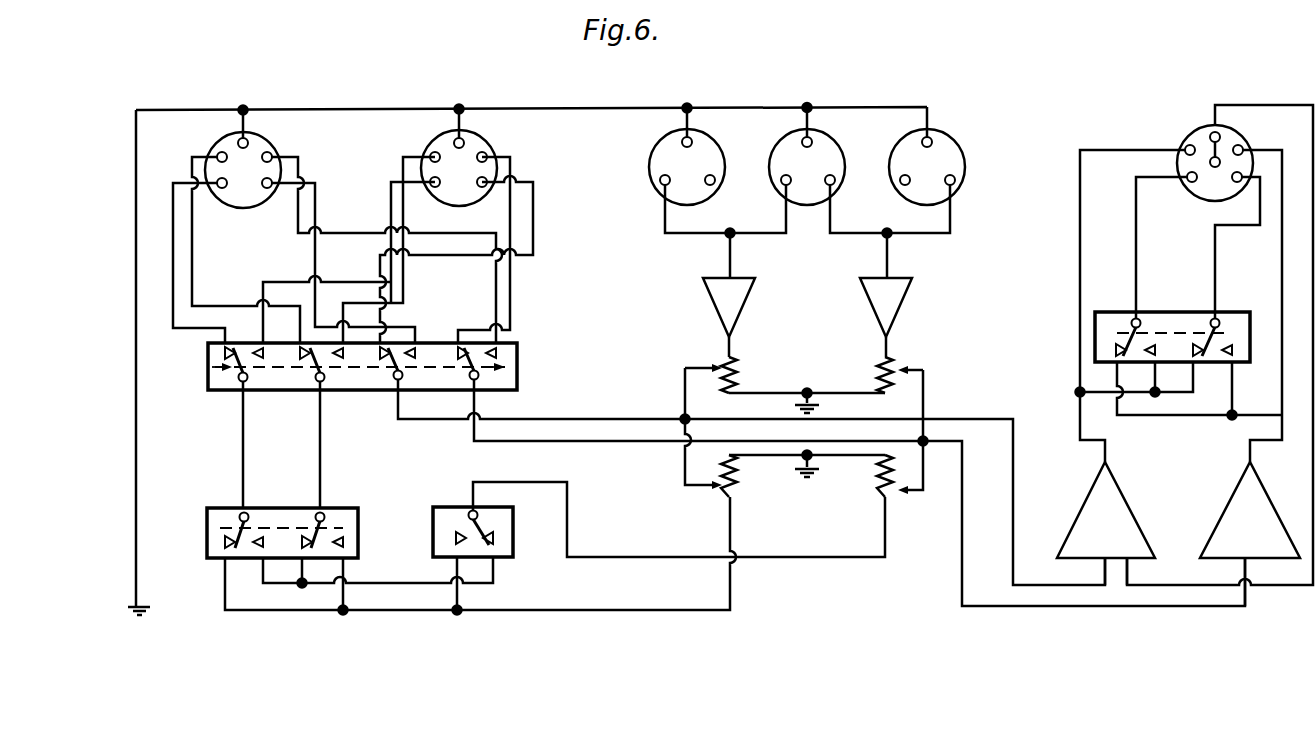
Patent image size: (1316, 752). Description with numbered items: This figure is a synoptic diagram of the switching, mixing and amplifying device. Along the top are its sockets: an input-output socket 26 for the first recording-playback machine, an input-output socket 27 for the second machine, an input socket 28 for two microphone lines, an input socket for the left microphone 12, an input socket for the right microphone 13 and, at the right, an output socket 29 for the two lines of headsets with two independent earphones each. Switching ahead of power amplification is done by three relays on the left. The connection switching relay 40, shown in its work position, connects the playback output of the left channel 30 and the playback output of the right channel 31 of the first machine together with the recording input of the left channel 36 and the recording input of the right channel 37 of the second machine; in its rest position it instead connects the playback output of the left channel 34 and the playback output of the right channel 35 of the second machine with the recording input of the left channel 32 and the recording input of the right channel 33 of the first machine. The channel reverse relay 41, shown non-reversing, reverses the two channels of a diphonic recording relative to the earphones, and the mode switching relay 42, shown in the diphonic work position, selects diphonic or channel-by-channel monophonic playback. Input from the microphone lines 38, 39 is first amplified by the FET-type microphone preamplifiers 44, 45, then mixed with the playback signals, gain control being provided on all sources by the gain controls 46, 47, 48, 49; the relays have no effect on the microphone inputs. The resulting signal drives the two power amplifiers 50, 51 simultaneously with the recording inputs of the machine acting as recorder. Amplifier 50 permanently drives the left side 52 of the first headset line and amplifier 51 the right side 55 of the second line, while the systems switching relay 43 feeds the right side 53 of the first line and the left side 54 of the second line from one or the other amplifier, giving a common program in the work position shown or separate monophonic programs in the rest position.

The input socket for the left microphone 12 is at (687, 137).
The input socket for the right microphone 13 is at (927, 136).
The input-output socket for the first recording-playback machine 26 is at (245, 138).
The input-output socket for the second recording-playback machine 27 is at (459, 137).
The input socket for two microphone lines 28 is at (807, 136).
The output socket for the two lines of headsets 29 is at (1220, 328).
The playback output of the left channel 30 is at (173, 231).
The playback output of the right channel 31 is at (192, 229).
The recording input of the left channel 32 is at (315, 213).
The recording input of the right channel 33 is at (298, 210).
The playback output of the left channel 34 is at (391, 199).
The playback output of the right channel 35 is at (403, 212).
The recording input of the left channel 36 is at (533, 198).
The recording input of the right channel 37 is at (510, 227).
The microphone line 38 is at (786, 212).
The microphone line 39 is at (830, 212).
The connection switching relay 40 is at (208, 375).
The channel reverse switch relay 41 is at (207, 523).
The mode switching relay 42 is at (513, 540).
The systems switching relay 43 is at (1095, 333).
The FET-type microphone preamplifier 44 is at (742, 298).
The FET-type microphone preamplifier 45 is at (897, 298).
The gain control 46 is at (727, 360).
The gain control 47 is at (892, 364).
The gain control 48 is at (722, 488).
The gain control 49 is at (895, 493).
The power amplifier 50 is at (1090, 503).
The power amplifier 51 is at (1232, 503).
The left side of the first headset line 52 is at (1080, 250).
The right side of the first headset line 53 is at (1136, 233).
The left side of the second headset line 54 is at (1260, 203).
The right side of the second headset line 55 is at (1282, 222).